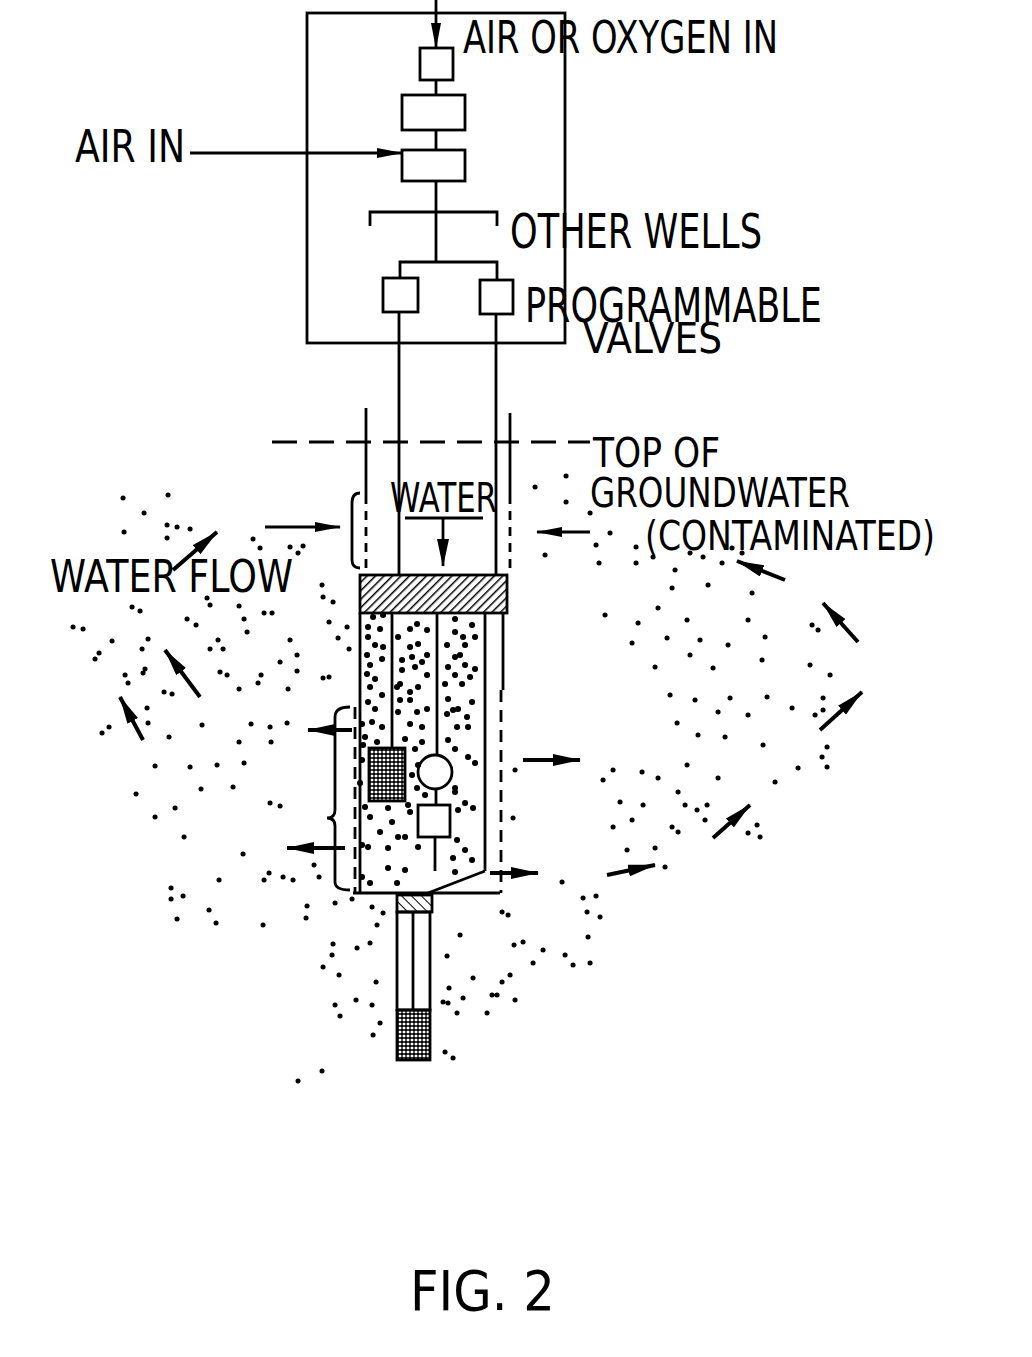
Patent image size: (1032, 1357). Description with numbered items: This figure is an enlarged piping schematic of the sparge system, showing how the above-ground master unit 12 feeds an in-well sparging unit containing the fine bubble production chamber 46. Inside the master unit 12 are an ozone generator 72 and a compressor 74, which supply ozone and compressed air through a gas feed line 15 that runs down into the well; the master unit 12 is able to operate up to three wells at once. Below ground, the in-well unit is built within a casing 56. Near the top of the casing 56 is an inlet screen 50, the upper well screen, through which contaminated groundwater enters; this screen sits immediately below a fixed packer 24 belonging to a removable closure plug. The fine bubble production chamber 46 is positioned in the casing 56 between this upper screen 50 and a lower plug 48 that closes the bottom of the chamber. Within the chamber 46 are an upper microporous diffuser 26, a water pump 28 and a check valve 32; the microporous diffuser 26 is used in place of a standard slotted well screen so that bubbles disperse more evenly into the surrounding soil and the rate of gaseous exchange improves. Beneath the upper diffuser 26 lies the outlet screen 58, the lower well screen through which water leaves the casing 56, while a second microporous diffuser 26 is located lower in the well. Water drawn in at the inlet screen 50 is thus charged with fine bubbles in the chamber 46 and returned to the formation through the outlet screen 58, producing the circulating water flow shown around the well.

The master unit 12 is at (307, 86).
The ozone generator 72 is at (462, 107).
The compressor 74 is at (462, 163).
The gas feed line 15 is at (399, 370).
The casing 56 is at (366, 463).
The inlet screen 50 is at (352, 500).
The fixed packer 24 is at (510, 597).
The fine bubble production chamber 46 is at (463, 697).
The microporous diffuser 26 is at (369, 773).
The water pump 28 is at (452, 776).
The check valve 32 is at (450, 823).
The outlet screen 58 is at (327, 818).
The lower plug 48 is at (443, 903).